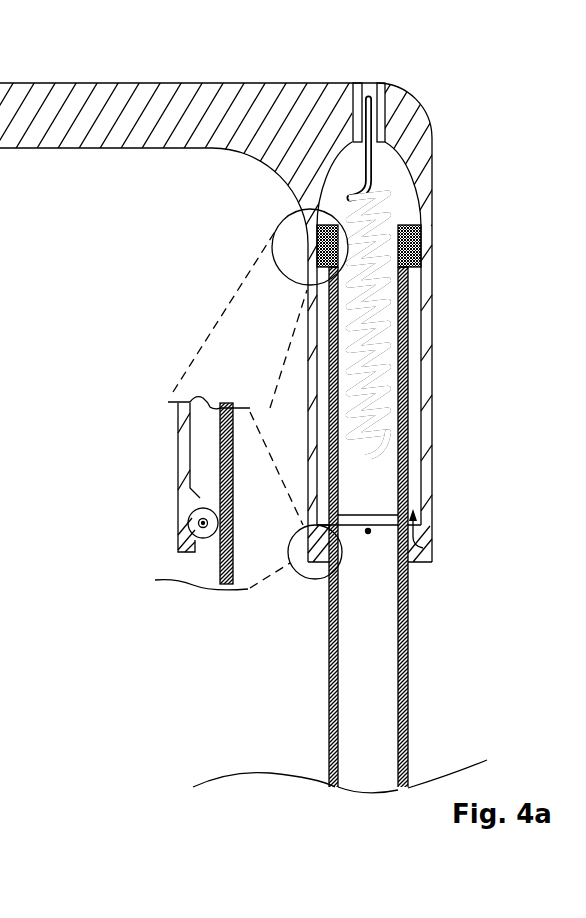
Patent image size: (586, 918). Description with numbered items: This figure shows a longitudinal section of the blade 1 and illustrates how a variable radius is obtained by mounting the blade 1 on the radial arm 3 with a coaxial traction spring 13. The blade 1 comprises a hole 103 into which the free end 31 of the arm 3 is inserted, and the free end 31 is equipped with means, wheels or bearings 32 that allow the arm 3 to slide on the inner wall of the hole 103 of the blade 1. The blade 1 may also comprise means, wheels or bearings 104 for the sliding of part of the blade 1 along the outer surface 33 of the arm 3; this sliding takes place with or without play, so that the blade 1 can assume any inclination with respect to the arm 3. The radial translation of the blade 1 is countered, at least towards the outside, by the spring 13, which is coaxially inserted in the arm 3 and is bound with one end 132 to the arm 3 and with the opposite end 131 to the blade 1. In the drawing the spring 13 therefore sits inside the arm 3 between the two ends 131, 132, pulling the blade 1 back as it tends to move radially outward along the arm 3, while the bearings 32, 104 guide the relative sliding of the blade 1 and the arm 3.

The blade 1 is at (182, 108).
The radial arm 3 is at (408, 690).
The traction spring 13 is at (388, 366).
The free end 31 is at (407, 472).
The wheels or bearings 32 is at (316, 245).
The outer surface 33 is at (210, 478).
The hole 103 is at (423, 548).
The wheels or bearings 104 is at (205, 525).
The spring end 131 is at (372, 105).
The spring end 132 is at (368, 532).